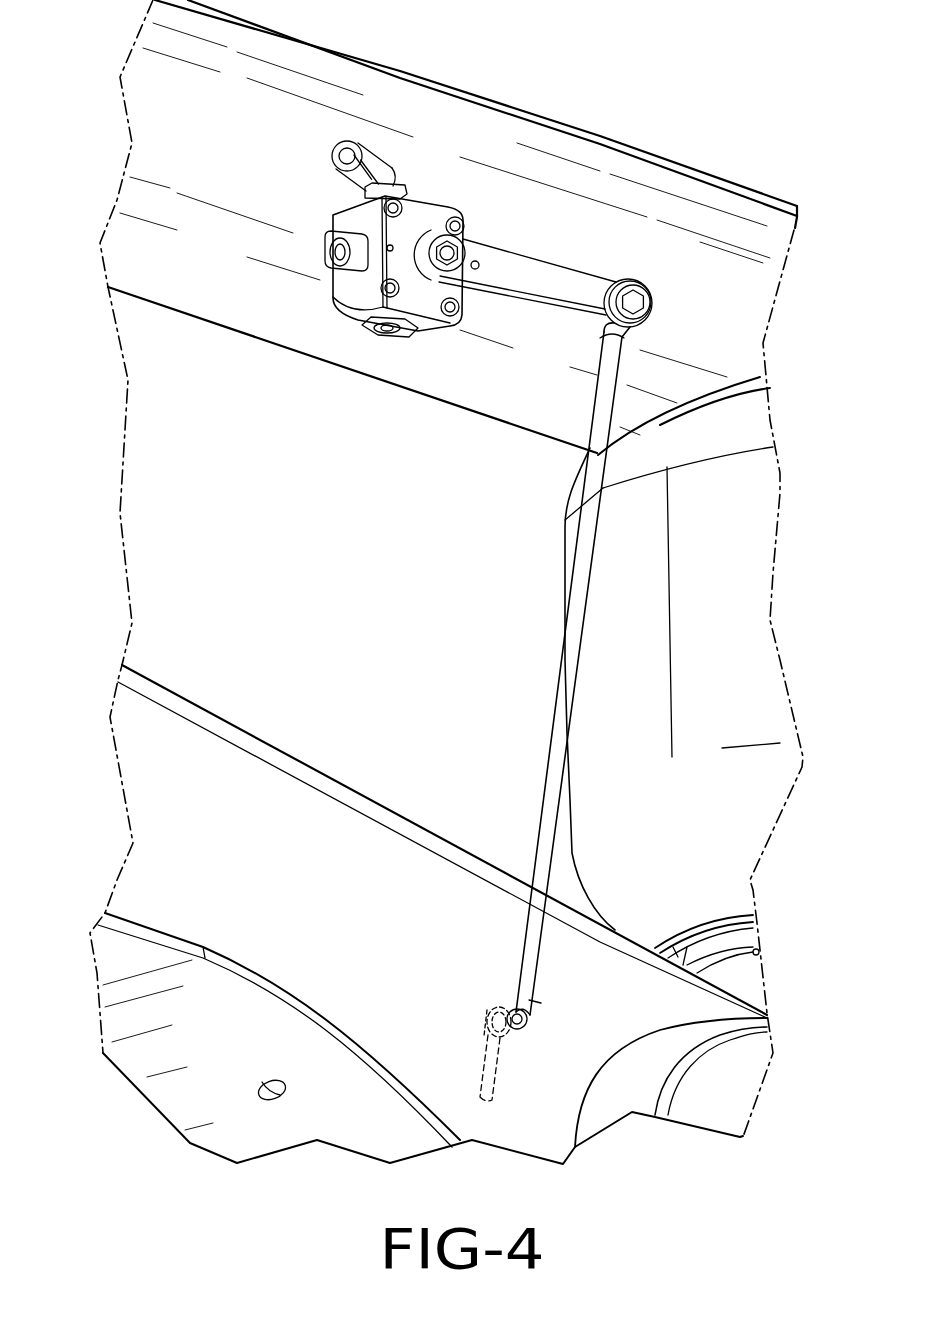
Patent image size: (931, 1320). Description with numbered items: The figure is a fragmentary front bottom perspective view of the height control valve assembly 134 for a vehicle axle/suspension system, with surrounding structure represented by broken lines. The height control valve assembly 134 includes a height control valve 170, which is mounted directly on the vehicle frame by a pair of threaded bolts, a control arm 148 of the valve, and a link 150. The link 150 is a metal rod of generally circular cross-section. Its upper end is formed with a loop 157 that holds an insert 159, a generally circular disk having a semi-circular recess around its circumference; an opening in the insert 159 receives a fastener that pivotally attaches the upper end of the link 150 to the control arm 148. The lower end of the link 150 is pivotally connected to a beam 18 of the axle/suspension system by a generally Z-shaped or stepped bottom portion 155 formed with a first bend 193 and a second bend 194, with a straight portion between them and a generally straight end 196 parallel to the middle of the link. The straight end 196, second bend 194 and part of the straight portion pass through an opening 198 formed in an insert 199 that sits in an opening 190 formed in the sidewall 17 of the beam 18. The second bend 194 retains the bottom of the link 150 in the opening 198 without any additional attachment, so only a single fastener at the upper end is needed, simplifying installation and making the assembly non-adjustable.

The sidewall 17 is at (267, 860).
The beam 18 is at (216, 715).
The height control valve assembly 134 is at (332, 209).
The control arm 148 is at (522, 284).
The link 150 is at (560, 677).
The Z-shaped bottom portion 155 is at (546, 1003).
The loop 157 is at (606, 334).
The insert 159 is at (636, 288).
The height control valve 170 is at (416, 214).
The opening 190 is at (526, 1032).
The first bend 193 is at (514, 1010).
The second bend 194 is at (482, 1027).
The straight end 196 is at (482, 1097).
The opening 198 is at (523, 1022).
The insert 199 is at (503, 1010).